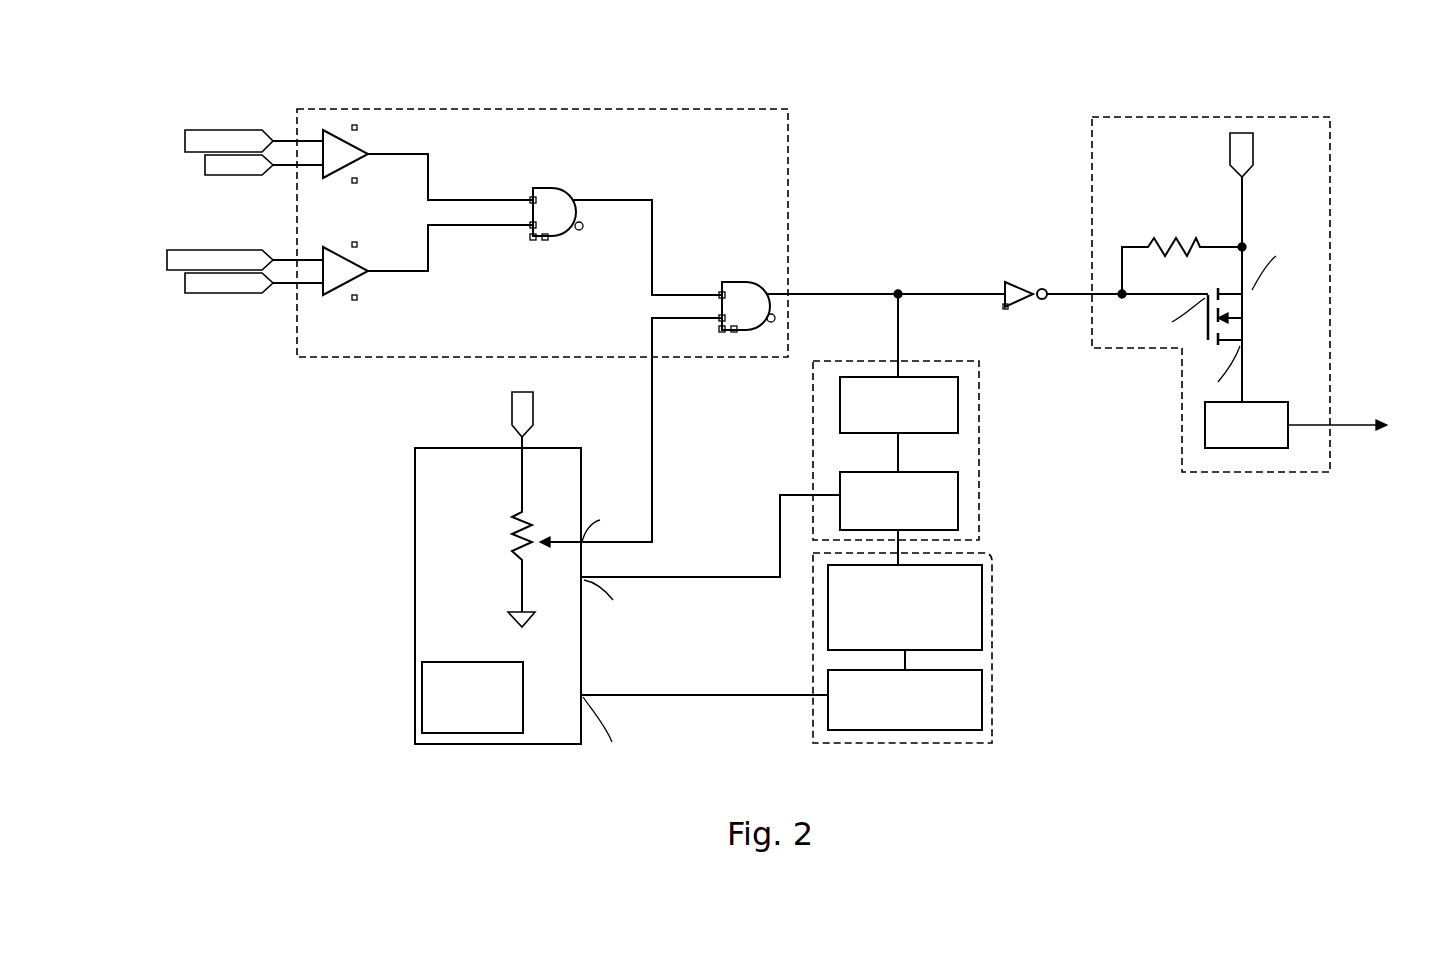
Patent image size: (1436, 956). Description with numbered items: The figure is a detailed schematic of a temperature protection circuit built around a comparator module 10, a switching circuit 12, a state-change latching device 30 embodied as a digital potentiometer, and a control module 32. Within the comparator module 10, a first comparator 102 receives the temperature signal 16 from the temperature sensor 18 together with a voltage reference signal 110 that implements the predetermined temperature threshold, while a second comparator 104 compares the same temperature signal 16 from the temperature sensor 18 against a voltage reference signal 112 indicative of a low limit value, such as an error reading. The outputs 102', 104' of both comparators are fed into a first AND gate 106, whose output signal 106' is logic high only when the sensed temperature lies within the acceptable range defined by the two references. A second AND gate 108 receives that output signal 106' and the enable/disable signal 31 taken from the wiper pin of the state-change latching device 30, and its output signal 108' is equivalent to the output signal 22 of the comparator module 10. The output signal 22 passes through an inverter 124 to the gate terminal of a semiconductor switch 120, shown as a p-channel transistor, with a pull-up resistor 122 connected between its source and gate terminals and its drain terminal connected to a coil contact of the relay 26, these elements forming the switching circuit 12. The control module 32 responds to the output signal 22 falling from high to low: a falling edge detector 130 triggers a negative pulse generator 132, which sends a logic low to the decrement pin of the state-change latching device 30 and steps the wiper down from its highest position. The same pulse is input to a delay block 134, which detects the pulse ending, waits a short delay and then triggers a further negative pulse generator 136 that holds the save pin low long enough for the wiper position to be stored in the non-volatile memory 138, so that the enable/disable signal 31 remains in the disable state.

The comparator module 10 is at (755, 109).
The switching circuit 12 is at (1308, 117).
The temperature signal 16 is at (284, 141).
The temperature sensor 18 is at (210, 130).
The output signal 22 is at (862, 293).
The relay 26 is at (1258, 450).
The state-change latching device 30 is at (415, 598).
The enable/disable signal 31 is at (654, 410).
The control module 32 is at (992, 702).
The first comparator 102 is at (385, 103).
The output of first comparator 102' is at (450, 161).
The second comparator 104 is at (328, 334).
The output of second comparator 104' is at (450, 269).
The first AND gate 106 is at (572, 144).
The output signal of first AND gate 106' is at (648, 222).
The second AND gate 108 is at (800, 234).
The output signal of second AND gate 108' is at (832, 322).
The voltage reference signal 110 is at (222, 176).
The voltage reference signal 112 is at (167, 262).
The semiconductor switch 120 is at (1297, 281).
The pull-up resistor 122 is at (1170, 212).
The inverter 124 is at (1005, 285).
The falling edge detector 130 is at (958, 405).
The negative pulse generator 132 is at (958, 497).
The delay block 134 is at (982, 600).
The further negative pulse generator 136 is at (962, 732).
The non-volatile memory 138 is at (476, 735).